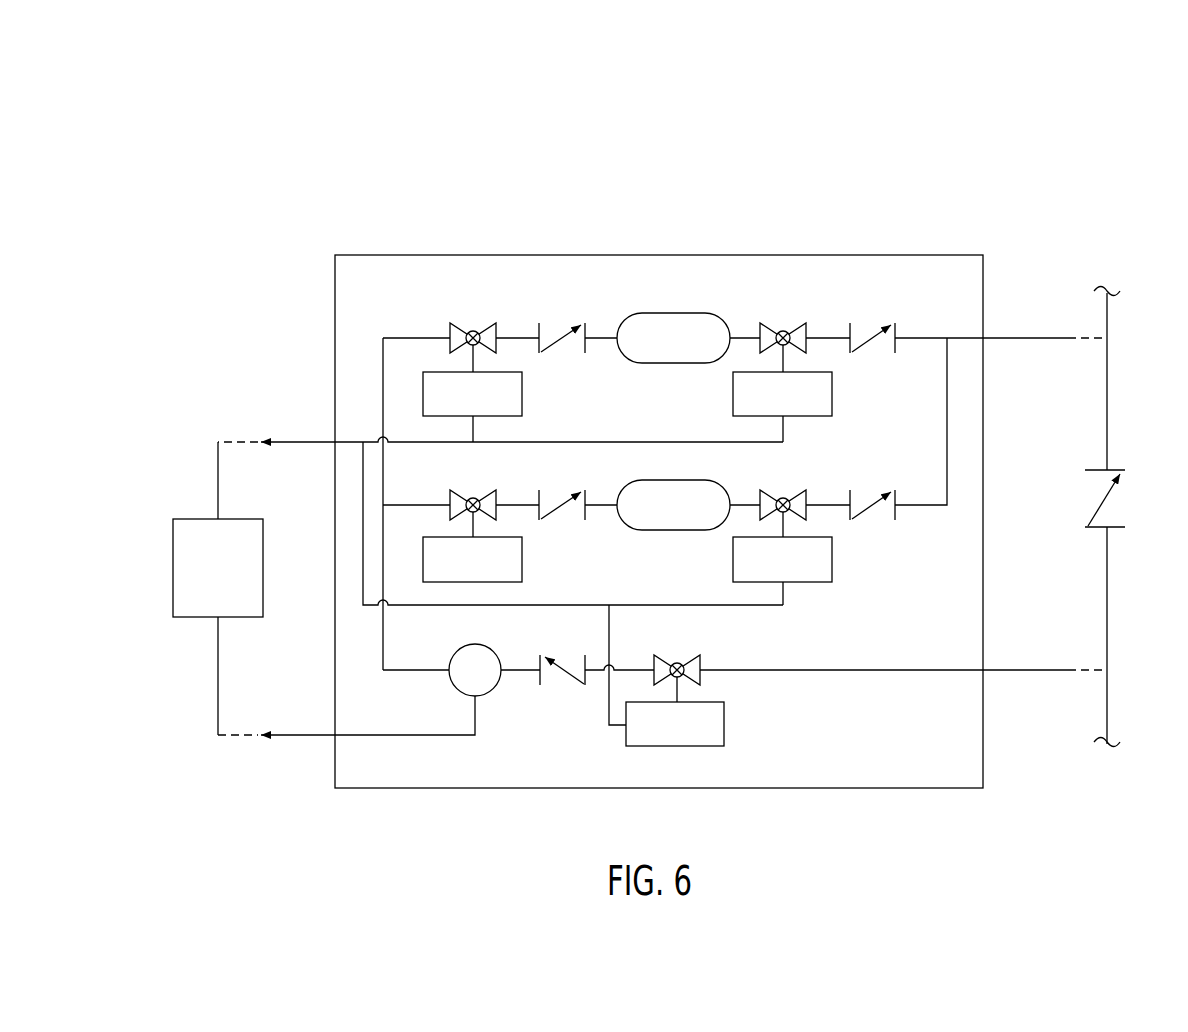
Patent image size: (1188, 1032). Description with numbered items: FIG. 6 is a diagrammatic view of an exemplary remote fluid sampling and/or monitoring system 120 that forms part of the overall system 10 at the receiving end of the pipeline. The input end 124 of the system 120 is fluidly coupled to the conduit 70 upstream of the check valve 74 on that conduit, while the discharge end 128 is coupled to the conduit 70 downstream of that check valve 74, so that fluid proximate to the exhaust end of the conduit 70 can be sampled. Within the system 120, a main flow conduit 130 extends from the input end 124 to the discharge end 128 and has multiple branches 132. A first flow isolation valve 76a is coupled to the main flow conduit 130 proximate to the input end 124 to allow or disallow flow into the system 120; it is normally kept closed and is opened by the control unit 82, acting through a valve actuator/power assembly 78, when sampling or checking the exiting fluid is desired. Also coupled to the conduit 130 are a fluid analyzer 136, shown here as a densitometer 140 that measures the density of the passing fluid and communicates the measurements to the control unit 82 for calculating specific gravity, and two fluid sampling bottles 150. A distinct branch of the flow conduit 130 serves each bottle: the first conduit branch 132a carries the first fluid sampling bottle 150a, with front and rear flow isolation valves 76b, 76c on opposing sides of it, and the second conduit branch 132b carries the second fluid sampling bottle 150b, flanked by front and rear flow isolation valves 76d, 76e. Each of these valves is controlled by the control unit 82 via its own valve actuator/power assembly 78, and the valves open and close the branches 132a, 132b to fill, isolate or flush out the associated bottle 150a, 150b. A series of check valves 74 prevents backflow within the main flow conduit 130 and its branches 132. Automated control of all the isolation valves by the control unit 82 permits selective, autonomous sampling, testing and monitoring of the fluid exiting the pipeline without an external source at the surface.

The system 10 is at (964, 110).
The fluid sampling and/or monitoring system 120 is at (701, 176).
The conduit 70 is at (1107, 421).
The check valve 74 is at (1110, 495).
The discharge end 128 is at (995, 313).
The input end 124 is at (992, 652).
The main flow conduit 130 is at (846, 672).
The branches 132 is at (915, 329).
The first conduit branch 132a is at (407, 504).
The second conduit branch 132b is at (400, 337).
The fluid sampling bottle 150 is at (706, 311).
The first fluid sampling bottle 150a is at (662, 480).
The second fluid sampling bottle 150b is at (650, 313).
The first flow isolation valve 76a is at (679, 664).
The front flow isolation valve 76b is at (474, 498).
The rear flow isolation valve 76c is at (784, 498).
The front flow isolation valve 76d is at (474, 331).
The rear flow isolation valve 76e is at (784, 331).
The valve actuator/power assembly 78 is at (522, 391).
The fluid analyzer 136 is at (457, 693).
The densitometer 140 is at (488, 698).
The control unit 82 is at (191, 518).